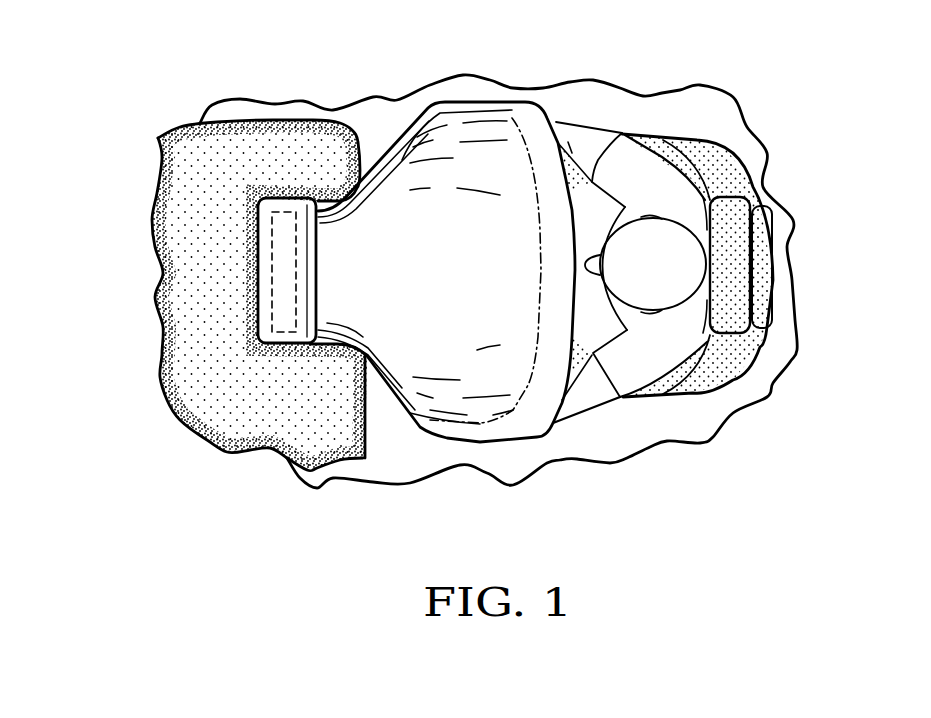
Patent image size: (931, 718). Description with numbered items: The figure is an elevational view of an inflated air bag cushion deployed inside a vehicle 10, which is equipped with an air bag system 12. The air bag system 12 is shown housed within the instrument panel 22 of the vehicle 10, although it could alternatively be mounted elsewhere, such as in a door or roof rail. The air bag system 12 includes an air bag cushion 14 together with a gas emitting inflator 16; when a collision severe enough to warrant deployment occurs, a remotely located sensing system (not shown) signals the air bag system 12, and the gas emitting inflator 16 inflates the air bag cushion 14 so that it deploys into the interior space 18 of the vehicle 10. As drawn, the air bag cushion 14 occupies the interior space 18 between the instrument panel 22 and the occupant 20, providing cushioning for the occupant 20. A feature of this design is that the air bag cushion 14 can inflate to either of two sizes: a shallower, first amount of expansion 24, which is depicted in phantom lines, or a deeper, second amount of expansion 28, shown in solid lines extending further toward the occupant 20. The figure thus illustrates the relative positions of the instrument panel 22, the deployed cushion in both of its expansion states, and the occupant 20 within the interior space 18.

The vehicle 10 is at (407, 457).
The air bag system 12 is at (374, 122).
The air bag cushion 14 is at (550, 415).
The gas emitting inflator 16 is at (258, 284).
The interior space 18 is at (612, 432).
The occupant 20 is at (660, 172).
The instrument panel 22 is at (267, 153).
The first amount of expansion 24 is at (547, 132).
The second amount of expansion 28 is at (556, 123).